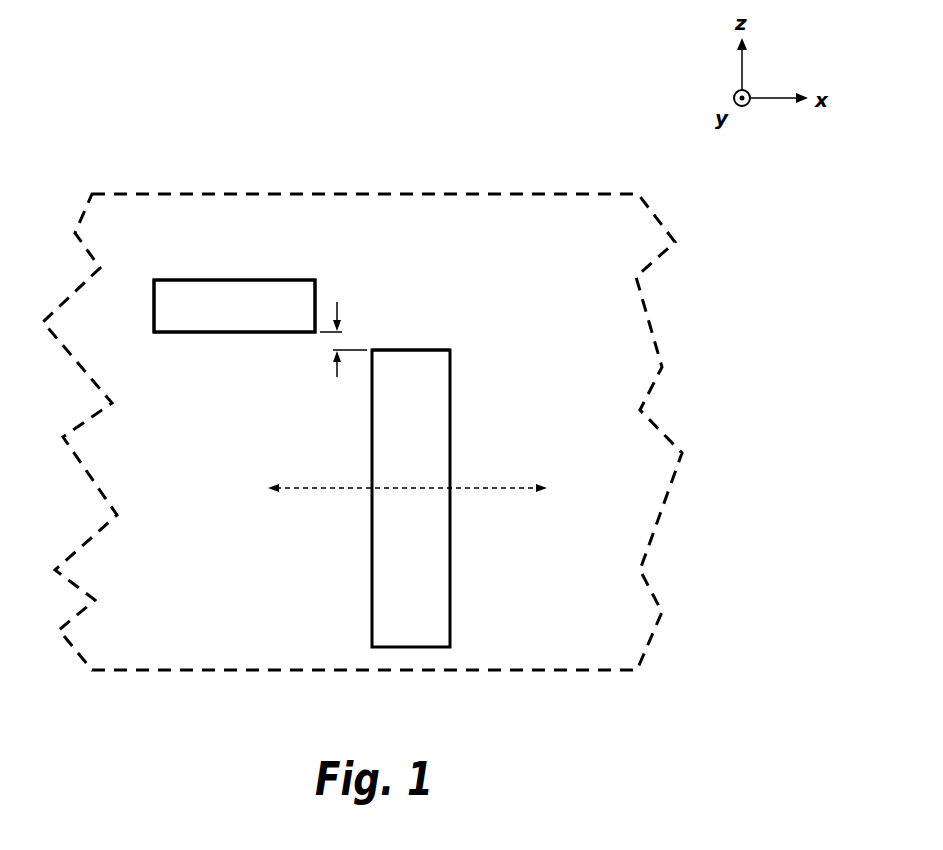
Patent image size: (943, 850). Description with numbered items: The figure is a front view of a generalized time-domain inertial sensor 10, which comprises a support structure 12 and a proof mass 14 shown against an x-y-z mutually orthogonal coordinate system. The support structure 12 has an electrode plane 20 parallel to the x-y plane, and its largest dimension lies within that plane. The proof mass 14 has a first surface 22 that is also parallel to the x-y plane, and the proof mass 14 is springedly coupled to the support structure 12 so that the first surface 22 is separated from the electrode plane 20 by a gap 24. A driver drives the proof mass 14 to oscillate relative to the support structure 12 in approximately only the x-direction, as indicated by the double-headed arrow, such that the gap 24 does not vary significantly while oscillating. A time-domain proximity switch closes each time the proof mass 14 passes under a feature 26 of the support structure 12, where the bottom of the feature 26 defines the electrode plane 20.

The time-domain inertial sensor 10 is at (106, 161).
The support structure 12 is at (166, 671).
The proof mass 14 is at (450, 597).
The electrode plane 20 is at (204, 345).
The first surface 22 is at (437, 338).
The gap 24 is at (362, 337).
The feature 26 is at (227, 280).